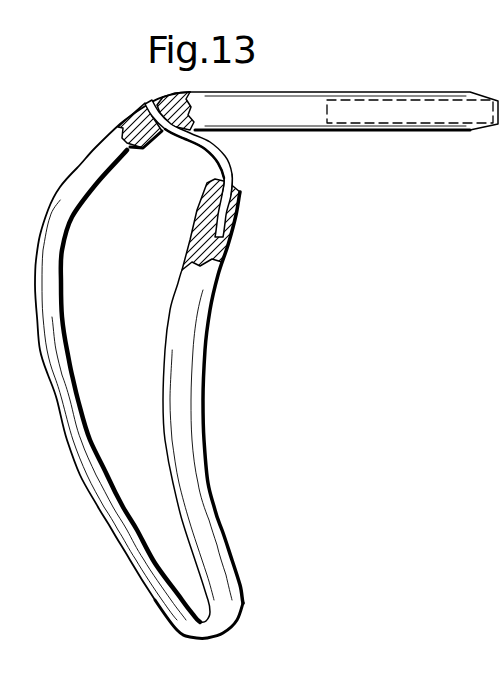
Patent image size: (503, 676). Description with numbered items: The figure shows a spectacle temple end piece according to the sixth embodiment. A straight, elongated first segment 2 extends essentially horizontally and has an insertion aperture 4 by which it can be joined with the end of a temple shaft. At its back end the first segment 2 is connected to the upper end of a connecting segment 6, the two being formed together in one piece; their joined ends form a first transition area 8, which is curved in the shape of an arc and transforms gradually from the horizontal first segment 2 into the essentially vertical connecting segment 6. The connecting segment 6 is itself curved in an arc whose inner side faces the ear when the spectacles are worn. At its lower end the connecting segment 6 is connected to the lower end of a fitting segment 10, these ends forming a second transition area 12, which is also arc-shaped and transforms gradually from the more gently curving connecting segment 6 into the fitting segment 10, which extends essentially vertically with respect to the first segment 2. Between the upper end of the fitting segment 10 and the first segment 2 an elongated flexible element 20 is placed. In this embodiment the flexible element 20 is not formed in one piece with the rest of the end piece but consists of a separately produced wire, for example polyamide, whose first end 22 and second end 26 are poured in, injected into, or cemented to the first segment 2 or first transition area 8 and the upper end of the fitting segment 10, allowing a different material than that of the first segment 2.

The first segment 2 is at (308, 102).
The insertion aperture 4 is at (425, 105).
The connecting segment 6 is at (58, 443).
The first transition area 8 is at (107, 147).
The fitting segment 10 is at (222, 351).
The second transition area 12 is at (233, 615).
The flexible element 20 is at (199, 173).
The first end 22 is at (173, 136).
The second end 26 is at (229, 177).